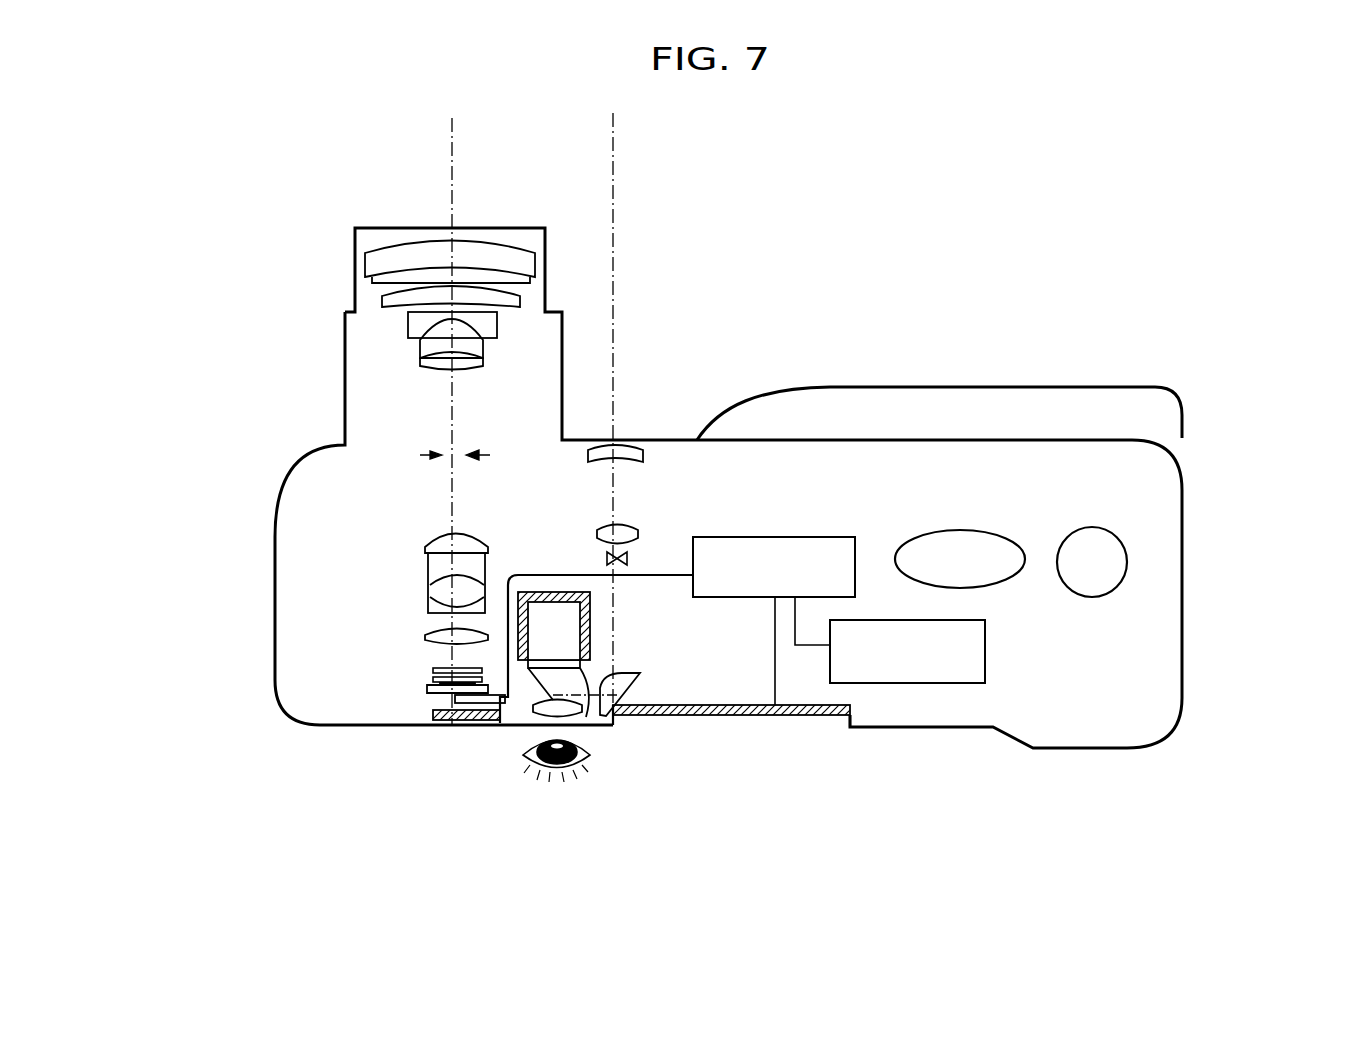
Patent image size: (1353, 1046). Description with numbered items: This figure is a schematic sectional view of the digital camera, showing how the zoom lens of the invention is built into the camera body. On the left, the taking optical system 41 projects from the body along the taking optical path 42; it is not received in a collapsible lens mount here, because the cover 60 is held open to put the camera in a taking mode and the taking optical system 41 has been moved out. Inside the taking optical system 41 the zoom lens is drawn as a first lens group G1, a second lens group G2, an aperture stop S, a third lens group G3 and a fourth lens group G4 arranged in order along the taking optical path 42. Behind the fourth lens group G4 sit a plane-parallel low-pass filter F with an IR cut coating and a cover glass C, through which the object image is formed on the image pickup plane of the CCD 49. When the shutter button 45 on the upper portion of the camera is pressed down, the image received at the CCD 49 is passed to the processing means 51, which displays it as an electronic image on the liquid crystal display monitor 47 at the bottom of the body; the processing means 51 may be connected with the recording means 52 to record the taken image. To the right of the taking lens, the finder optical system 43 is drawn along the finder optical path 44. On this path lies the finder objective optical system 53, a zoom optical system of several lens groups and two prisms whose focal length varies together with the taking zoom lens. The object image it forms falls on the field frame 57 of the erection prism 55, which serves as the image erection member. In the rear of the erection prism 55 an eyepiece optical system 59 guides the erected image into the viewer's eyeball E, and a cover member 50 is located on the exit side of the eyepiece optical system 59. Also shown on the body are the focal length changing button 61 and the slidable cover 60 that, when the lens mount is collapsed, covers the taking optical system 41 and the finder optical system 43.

The taking optical system 41 is at (374, 398).
The taking optical path 42 is at (452, 150).
The finder optical system 43 is at (651, 460).
The finder optical path 44 is at (613, 142).
The shutter button 45 is at (996, 568).
The liquid crystal display monitor 47 is at (850, 715).
The CCD 49 is at (428, 693).
The cover member 50 is at (530, 725).
The processing means 51 is at (855, 545).
The recording means 52 is at (985, 668).
The finder objective optical system 53 is at (676, 519).
The erection prism 55 is at (583, 628).
The field frame 57 is at (550, 592).
The eyepiece optical system 59 is at (590, 722).
The cover 60 is at (1025, 386).
The focal length changing button 61 is at (1087, 548).
The first lens group G1 is at (346, 268).
The second lens group G2 is at (515, 335).
The third lens group G3 is at (400, 570).
The fourth lens group G4 is at (400, 634).
The aperture stop S is at (482, 455).
The low-pass filter F is at (435, 670).
The cover glass C is at (435, 683).
The viewer's eyeball E is at (562, 812).